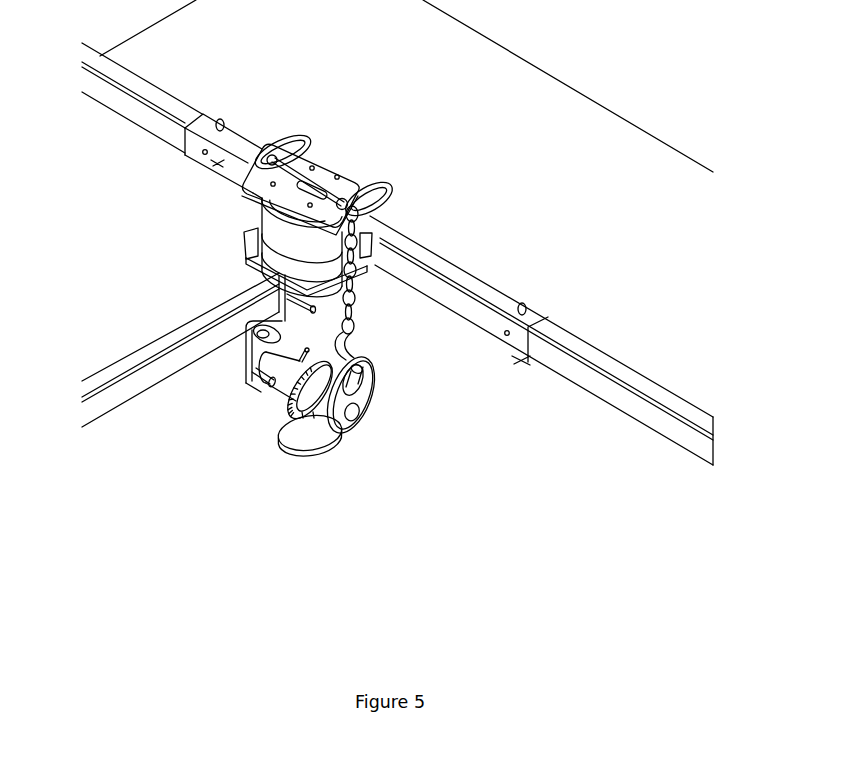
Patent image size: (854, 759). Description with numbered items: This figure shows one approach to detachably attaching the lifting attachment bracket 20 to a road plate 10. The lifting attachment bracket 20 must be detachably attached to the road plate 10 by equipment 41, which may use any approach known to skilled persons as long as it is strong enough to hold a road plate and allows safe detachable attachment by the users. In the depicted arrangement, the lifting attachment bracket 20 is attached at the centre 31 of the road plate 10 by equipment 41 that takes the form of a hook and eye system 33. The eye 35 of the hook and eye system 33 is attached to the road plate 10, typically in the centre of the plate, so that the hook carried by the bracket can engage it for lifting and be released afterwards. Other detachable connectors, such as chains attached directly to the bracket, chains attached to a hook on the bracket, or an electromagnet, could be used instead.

The road plate 10 is at (537, 127).
The lifting attachment bracket 20 is at (391, 231).
The centre 31 is at (324, 462).
The hook and eye system 33 is at (397, 370).
The eye 35 is at (437, 448).
The equipment 41 is at (659, 694).